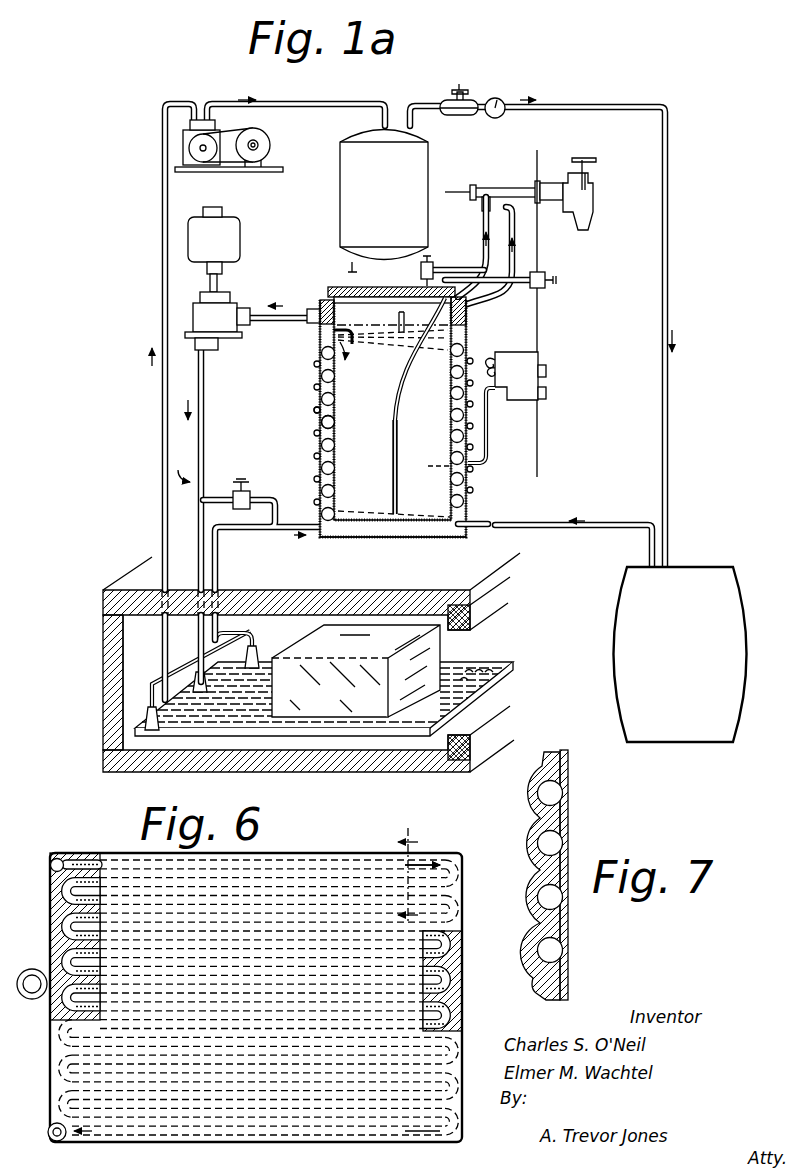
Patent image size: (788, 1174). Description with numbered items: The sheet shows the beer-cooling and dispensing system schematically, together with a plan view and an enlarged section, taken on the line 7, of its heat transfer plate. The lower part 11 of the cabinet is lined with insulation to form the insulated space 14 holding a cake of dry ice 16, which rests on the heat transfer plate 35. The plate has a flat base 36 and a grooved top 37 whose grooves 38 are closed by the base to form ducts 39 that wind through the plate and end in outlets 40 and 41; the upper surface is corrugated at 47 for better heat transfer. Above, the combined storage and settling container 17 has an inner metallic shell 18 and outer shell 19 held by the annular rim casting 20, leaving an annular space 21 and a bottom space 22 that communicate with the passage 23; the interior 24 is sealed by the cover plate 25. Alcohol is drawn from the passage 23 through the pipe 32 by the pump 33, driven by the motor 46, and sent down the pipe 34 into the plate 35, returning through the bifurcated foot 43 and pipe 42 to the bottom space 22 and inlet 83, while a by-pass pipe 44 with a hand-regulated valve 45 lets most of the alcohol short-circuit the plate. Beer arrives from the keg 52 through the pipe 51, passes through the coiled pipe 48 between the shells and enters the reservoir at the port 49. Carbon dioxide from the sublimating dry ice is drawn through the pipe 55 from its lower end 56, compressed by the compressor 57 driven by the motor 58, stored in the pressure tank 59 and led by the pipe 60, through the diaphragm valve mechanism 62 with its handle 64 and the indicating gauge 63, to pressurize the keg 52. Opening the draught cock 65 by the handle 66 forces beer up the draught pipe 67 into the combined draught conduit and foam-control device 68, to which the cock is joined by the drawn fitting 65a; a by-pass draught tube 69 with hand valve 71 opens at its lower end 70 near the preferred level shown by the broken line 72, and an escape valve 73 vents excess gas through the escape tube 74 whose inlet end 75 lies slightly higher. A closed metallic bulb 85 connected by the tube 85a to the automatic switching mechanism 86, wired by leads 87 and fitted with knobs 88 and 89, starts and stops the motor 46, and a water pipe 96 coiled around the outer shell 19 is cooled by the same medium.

In FIG. 1A, the lower part of the cabinet 11 is at (100, 662).
In FIG. 1A, the insulated space 14 is at (300, 612).
In FIG. 1A, the cake of dry ice 16 is at (440, 649).
In FIG. 1A, the combined storage and settling container 17 is at (317, 395).
In FIG. 1A, the inner metallic shell 18 is at (338, 394).
In FIG. 1A, the outer shell 19 is at (320, 368).
In FIG. 1A, the annular rim casting 20 is at (328, 300).
In FIG. 1A, the annular space 21 is at (320, 458).
In FIG. 1A, the bottom space 22 is at (392, 531).
In FIG. 1A, the passage 23 is at (316, 308).
In FIG. 1A, the interior of the container 24 is at (393, 421).
In FIG. 1A, the cover plate 25 is at (337, 292).
In FIG. 1A, the pipe 32 is at (283, 323).
In FIG. 1A, the pump 33 is at (232, 300).
In FIG. 1A, the pipe 34 is at (203, 402).
In FIG. 6, the pipe 34 is at (33, 1000).
In FIG. 1A, the heat transfer plate 35 is at (508, 661).
In FIG. 6, the heat transfer plate 35 is at (305, 852).
In FIG. 6, the flat base 36 is at (256, 942).
In FIG. 7, the flat base 36 is at (570, 791).
In FIG. 7, the grooved top 37 is at (545, 764).
In FIG. 6, the grooves 38 is at (52, 878).
In FIG. 7, the grooves 38 is at (538, 795).
In FIG. 6, the ducts 39 is at (66, 936).
In FIG. 7, the ducts 39 is at (556, 812).
In FIG. 6, the outlet 40 is at (60, 858).
In FIG. 6, the outlet 41 is at (48, 1133).
In FIG. 1A, the pipe 42 is at (222, 556).
In FIG. 1A, the bifurcated foot 43 is at (170, 674).
In FIG. 1A, the by-pass pipe 44 is at (270, 500).
In FIG. 1A, the hand-regulated valve 45 is at (240, 480).
In FIG. 1A, the motor 46 is at (238, 232).
In FIG. 1A, the corrugations 47 is at (492, 671).
In FIG. 7, the corrugations 47 is at (530, 925).
In FIG. 1A, the coiled pipe 48 is at (336, 420).
In FIG. 1A, the port 49 is at (320, 337).
In FIG. 1A, the pipe 51 is at (504, 522).
In FIG. 1A, the beer keg 52 is at (708, 571).
In FIG. 1A, the pipe 55 is at (160, 422).
In FIG. 1A, the lower end of pipe 55 56 is at (150, 703).
In FIG. 1A, the compressor 57 is at (183, 140).
In FIG. 1A, the motor 58 is at (270, 143).
In FIG. 1A, the pressure tank 59 is at (422, 168).
In FIG. 1A, the pipe 60 is at (667, 198).
In FIG. 1A, the diaphragm valve mechanism 62 is at (478, 100).
In FIG. 1A, the indicating gauge 63 is at (503, 102).
In FIG. 1A, the handle 64 is at (458, 90).
In FIG. 1A, the draught cock 65 is at (590, 200).
In FIG. 1A, the fitting 65a is at (556, 181).
In FIG. 1A, the handle 66 is at (588, 158).
In FIG. 1A, the draught pipe 67 is at (392, 472).
In FIG. 1A, the combined draught conduit and foam-control device 68 is at (505, 186).
In FIG. 1A, the by-pass draught tube 69 is at (462, 268).
In FIG. 1A, the lower end of the by-pass draught tube 70 is at (398, 334).
In FIG. 1A, the hand valve 71 is at (430, 260).
In FIG. 1A, the broken line 72 is at (373, 289).
In FIG. 1A, the escape valve 73 is at (549, 281).
In FIG. 1A, the escape tube 74 is at (492, 326).
In FIG. 1A, the inlet end of the escape tube 75 is at (422, 342).
In FIG. 1A, the inlet 83 is at (332, 531).
In FIG. 1A, the closed metallic bulb 85 is at (428, 466).
In FIG. 1A, the tube 85a is at (489, 435).
In FIG. 1A, the automatic switching mechanism 86 is at (533, 362).
In FIG. 1A, the leads 87 is at (490, 351).
In FIG. 1A, the on-and-off rotatable knob 88 is at (548, 371).
In FIG. 1A, the rotatable knob 89 is at (548, 396).
In FIG. 1A, the pipe 96 is at (318, 412).
In FIG. 6, the section line 7- 7 is at (400, 876).